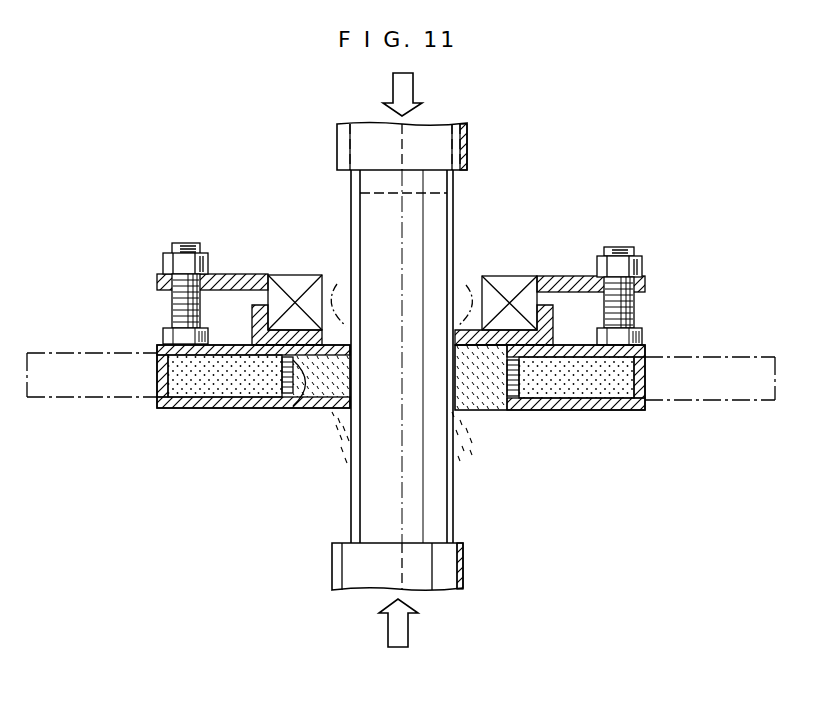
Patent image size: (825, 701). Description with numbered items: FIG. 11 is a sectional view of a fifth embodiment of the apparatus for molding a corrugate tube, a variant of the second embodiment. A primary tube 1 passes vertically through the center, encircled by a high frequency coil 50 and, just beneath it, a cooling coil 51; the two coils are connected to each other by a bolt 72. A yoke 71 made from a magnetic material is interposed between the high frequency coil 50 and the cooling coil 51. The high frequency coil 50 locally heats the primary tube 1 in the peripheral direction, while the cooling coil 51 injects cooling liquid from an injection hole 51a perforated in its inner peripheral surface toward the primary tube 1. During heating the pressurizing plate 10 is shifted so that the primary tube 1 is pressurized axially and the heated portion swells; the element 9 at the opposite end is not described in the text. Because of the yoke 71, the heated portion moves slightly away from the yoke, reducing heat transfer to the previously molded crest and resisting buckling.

The pressurizing plate 10 is at (467, 141).
The primary tube 1 is at (455, 221).
The lower load block 9 is at (463, 567).
The high frequency coil 50 is at (508, 283).
The yoke 71 is at (553, 316).
The bolt 72 is at (168, 316).
The cooling coil 51 is at (595, 410).
The injection hole 51a is at (307, 409).